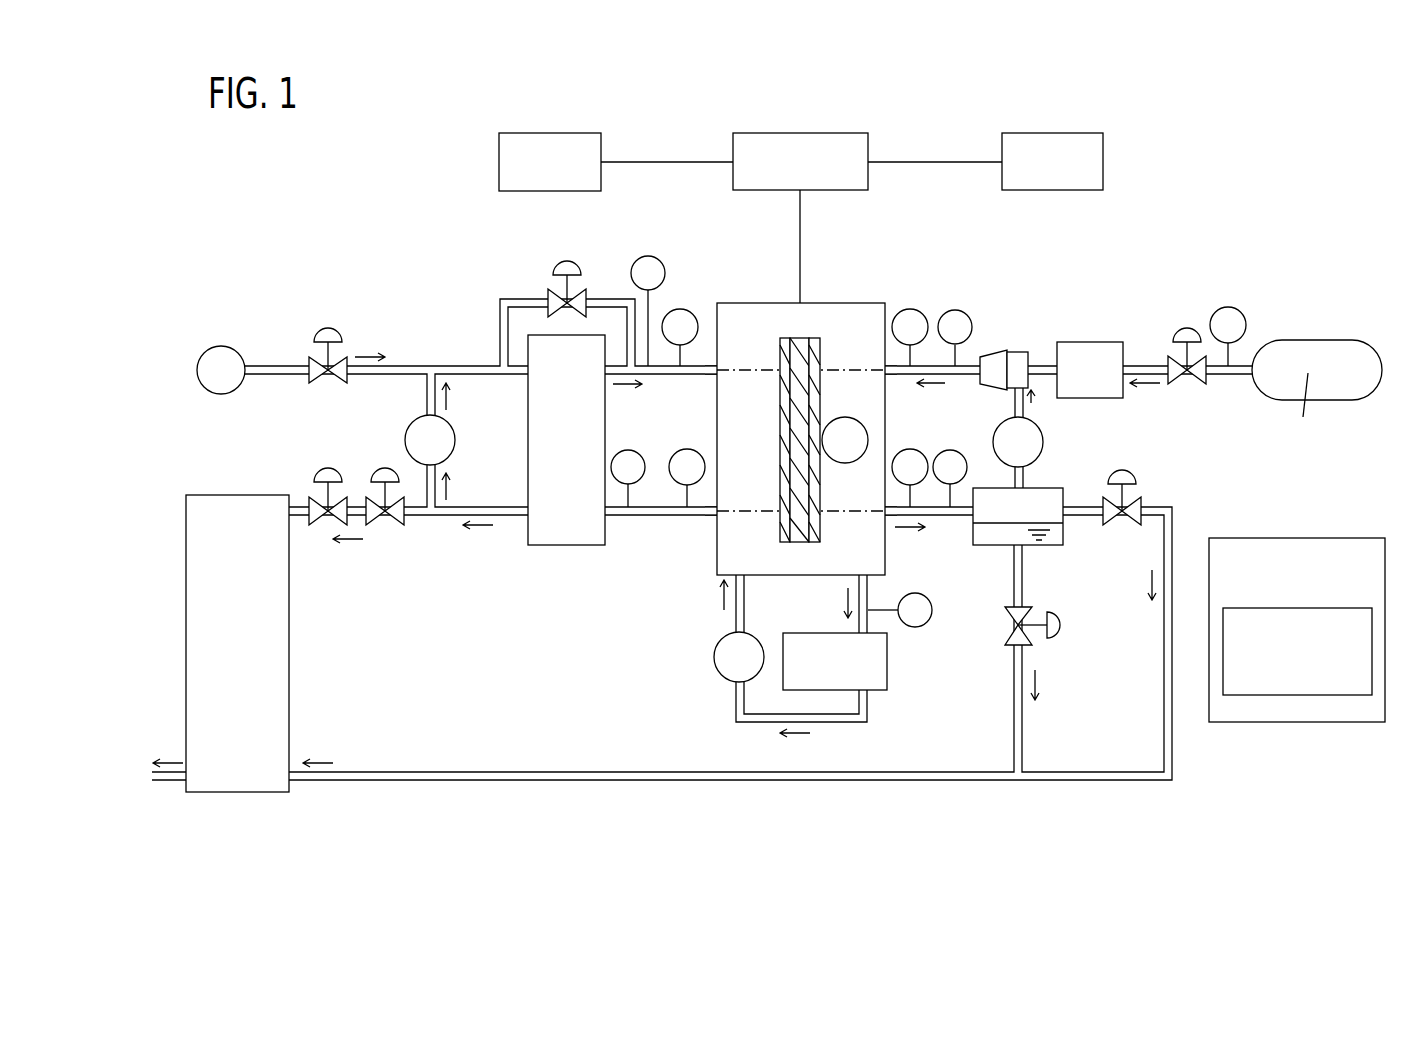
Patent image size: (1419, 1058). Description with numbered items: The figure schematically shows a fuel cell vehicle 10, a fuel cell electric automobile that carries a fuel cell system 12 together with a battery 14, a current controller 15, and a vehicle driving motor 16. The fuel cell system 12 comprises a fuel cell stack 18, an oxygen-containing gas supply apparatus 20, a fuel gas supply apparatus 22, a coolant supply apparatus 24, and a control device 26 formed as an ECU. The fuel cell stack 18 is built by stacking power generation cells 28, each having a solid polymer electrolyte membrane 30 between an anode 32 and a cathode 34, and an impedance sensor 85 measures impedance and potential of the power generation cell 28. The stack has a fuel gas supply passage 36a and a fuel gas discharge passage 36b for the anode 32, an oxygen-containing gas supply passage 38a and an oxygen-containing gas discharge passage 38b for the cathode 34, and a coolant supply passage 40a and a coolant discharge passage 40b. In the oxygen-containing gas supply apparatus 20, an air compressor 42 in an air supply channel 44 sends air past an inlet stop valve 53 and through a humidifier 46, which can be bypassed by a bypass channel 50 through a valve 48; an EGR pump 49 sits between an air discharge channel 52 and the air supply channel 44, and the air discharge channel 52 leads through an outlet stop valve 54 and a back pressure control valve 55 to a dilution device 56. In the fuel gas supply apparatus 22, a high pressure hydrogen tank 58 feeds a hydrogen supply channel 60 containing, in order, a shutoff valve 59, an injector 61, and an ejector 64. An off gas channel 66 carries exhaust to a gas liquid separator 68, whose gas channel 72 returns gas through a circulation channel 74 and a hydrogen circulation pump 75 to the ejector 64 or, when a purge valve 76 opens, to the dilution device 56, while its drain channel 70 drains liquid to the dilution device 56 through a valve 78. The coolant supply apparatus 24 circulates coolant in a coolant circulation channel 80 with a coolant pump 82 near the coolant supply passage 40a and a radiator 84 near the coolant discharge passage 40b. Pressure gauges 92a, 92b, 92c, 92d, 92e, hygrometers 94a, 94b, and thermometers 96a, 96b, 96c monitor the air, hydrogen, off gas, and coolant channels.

The fuel cell vehicle 10 is at (409, 154).
The fuel cell system 12 is at (1162, 217).
The battery 14 is at (552, 133).
The current controller 15 is at (797, 133).
The motor 16 is at (1052, 133).
The fuel cell stack 18 is at (801, 417).
The oxygen-containing gas supply apparatus 20 is at (244, 272).
The fuel gas supply apparatus 22 is at (1264, 282).
The coolant supply apparatus 24 is at (690, 713).
The control device 26 is at (1262, 538).
The power generation cell 28 is at (800, 400).
The solid polymer electrolyte membrane 30 is at (803, 402).
The anode 32 is at (843, 428).
The cathode 34 is at (783, 402).
The fuel gas supply passage 36a is at (890, 376).
The fuel gas discharge passage 36b is at (880, 516).
The oxygen-containing gas supply passage 38a is at (712, 373).
The oxygen-containing gas discharge passage 38b is at (712, 516).
The coolant supply passage 40a is at (745, 580).
The coolant discharge passage 40b is at (868, 580).
The air compressor 42 is at (223, 346).
The air supply channel 44 is at (512, 374).
The humidifier 46 is at (528, 445).
The valve 48 is at (560, 262).
The EGR pump 49 is at (406, 432).
The bypass channel 50 is at (504, 298).
The air discharge channel 52 is at (416, 516).
The inlet stop valve 53 is at (331, 328).
The outlet stop valve 54 is at (386, 468).
The back pressure control valve 55 is at (328, 468).
The dilution device 56 is at (290, 642).
The high pressure hydrogen tank 58 is at (1307, 340).
The shutoff valve 59 is at (1181, 328).
The hydrogen supply channel 60 is at (1150, 366).
The injector 61 is at (1085, 342).
The ejector 64 is at (990, 352).
The off gas channel 66 is at (953, 517).
The gas liquid separator 68 is at (1037, 545).
The drain channel 70 is at (1023, 587).
The gas channel 72 is at (1045, 516).
The circulation channel 74 is at (1023, 480).
The hydrogen circulation pump 75 is at (1043, 441).
The purge valve 76 is at (1128, 472).
The valve 78 is at (1062, 625).
The coolant circulation channel 80 is at (838, 723).
The coolant pump 82 is at (714, 657).
The radiator 84 is at (887, 672).
The impedance sensor 85 is at (842, 463).
The pressure gauge 92a is at (688, 310).
The pressure gauge 92b is at (687, 449).
The pressure gauge 92c is at (910, 309).
The pressure gauge 92d is at (898, 455).
The pressure gauge 92e is at (1228, 307).
The hygrometer 94a is at (640, 260).
The hygrometer 94b is at (955, 310).
The thermometer 96a is at (628, 450).
The thermometer 96b is at (957, 450).
The thermometer 96c is at (928, 624).